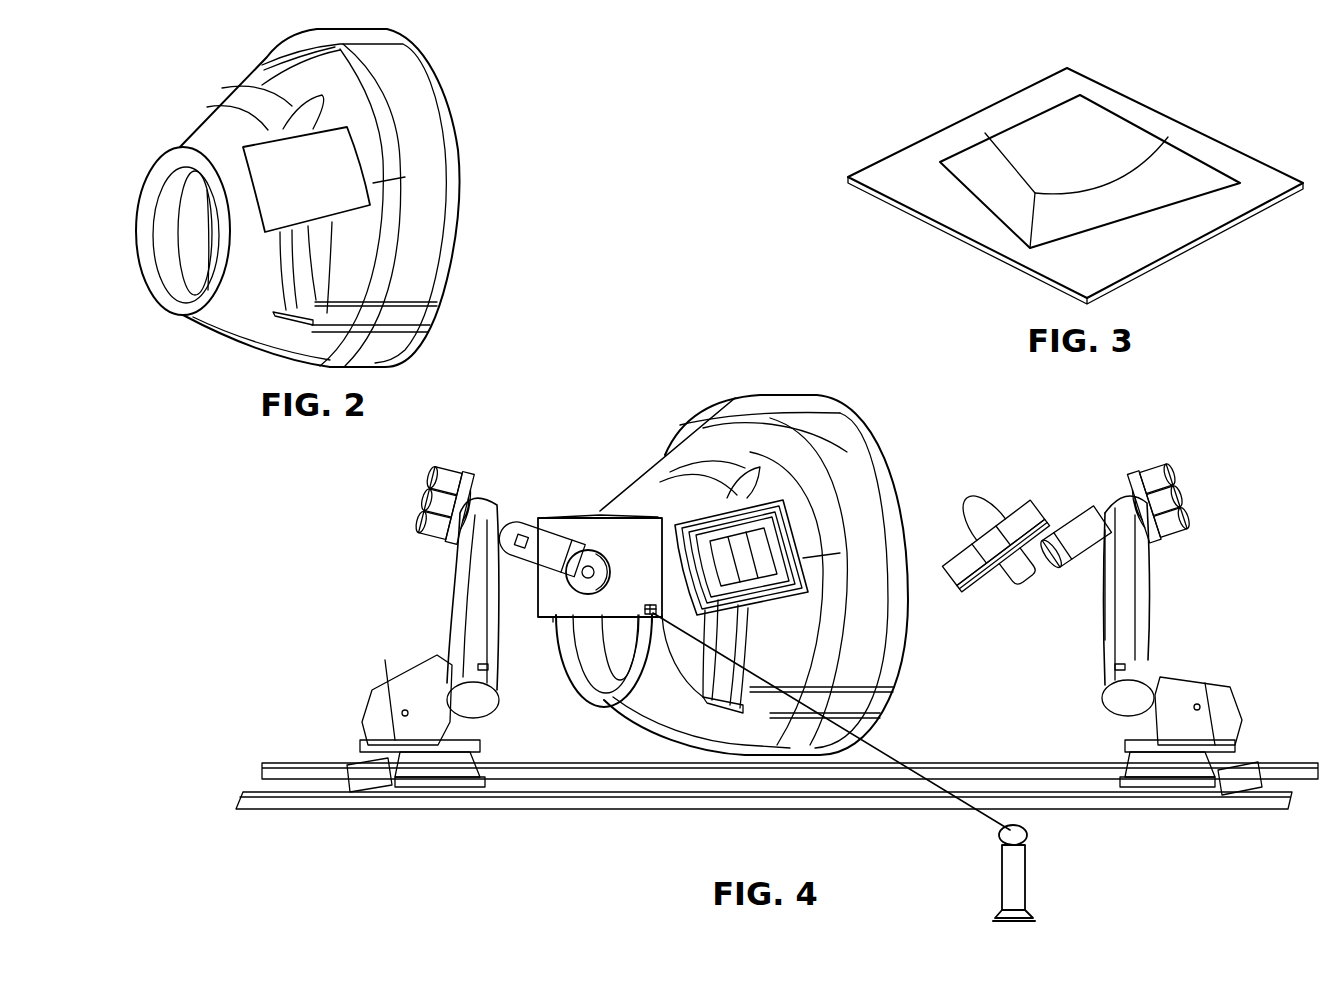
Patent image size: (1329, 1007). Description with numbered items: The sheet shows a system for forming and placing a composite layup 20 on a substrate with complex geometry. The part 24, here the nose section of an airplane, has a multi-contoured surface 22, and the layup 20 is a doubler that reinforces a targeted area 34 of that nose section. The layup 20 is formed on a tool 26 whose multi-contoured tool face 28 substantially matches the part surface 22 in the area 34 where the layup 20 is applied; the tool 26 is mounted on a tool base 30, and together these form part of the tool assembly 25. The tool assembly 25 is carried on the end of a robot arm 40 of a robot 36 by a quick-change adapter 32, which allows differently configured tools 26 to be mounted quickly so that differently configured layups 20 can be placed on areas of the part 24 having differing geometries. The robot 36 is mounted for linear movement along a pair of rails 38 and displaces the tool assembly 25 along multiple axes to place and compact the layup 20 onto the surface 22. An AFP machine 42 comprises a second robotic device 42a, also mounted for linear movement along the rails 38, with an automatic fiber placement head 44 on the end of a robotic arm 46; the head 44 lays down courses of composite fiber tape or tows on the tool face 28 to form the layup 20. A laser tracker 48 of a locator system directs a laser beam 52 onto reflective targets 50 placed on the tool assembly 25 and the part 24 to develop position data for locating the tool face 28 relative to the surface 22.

In FIG. 2, the composite layup 20 is at (287, 205).
In FIG. 2, the multi-contoured surface 22 is at (349, 238).
In FIG. 4, the multi-contoured surface 22 is at (665, 477).
In FIG. 2, the part 24 is at (417, 125).
In FIG. 4, the part 24 is at (707, 438).
In FIG. 4, the tool assembly 25 is at (520, 495).
In FIG. 3, the tool 26 is at (1180, 170).
In FIG. 4, the tool 26 is at (560, 517).
In FIG. 3, the multi-contoured tool face 28 is at (1058, 137).
In FIG. 3, the tool base 30 is at (946, 200).
In FIG. 4, the tool base 30 is at (600, 617).
In FIG. 4, the quick-change adapter 32 is at (612, 550).
In FIG. 2, the area 34 is at (245, 135).
In FIG. 4, the area 34 is at (802, 518).
In FIG. 4, the robot 36 is at (392, 517).
In FIG. 4, the rails 38 is at (632, 779).
In FIG. 4, the robot arm 40 is at (553, 617).
In FIG. 4, the AFP machine 42 is at (1220, 510).
In FIG. 4, the second robotic device 42a is at (1163, 593).
In FIG. 4, the automatic fiber placement head 44 is at (1027, 513).
In FIG. 4, the robotic arm 46 is at (1068, 527).
In FIG. 4, the laser tracker 48 is at (1027, 860).
In FIG. 4, the reflective targets 50 is at (652, 617).
In FIG. 4, the laser beam 52 is at (893, 757).